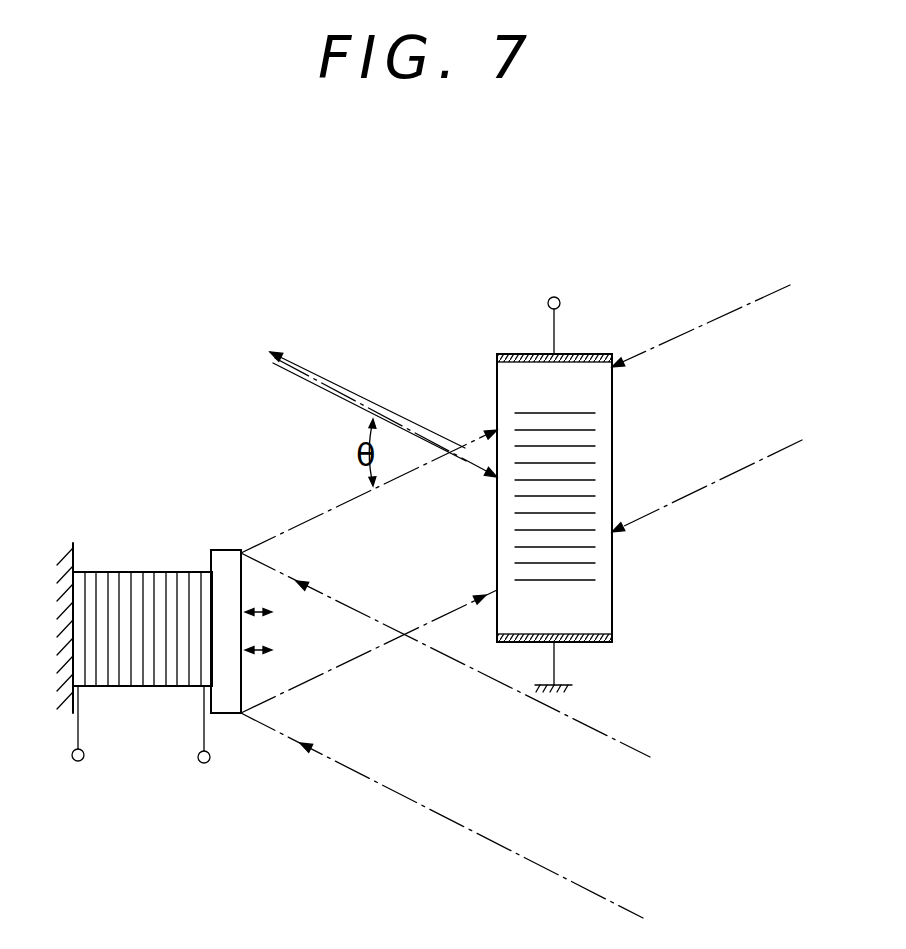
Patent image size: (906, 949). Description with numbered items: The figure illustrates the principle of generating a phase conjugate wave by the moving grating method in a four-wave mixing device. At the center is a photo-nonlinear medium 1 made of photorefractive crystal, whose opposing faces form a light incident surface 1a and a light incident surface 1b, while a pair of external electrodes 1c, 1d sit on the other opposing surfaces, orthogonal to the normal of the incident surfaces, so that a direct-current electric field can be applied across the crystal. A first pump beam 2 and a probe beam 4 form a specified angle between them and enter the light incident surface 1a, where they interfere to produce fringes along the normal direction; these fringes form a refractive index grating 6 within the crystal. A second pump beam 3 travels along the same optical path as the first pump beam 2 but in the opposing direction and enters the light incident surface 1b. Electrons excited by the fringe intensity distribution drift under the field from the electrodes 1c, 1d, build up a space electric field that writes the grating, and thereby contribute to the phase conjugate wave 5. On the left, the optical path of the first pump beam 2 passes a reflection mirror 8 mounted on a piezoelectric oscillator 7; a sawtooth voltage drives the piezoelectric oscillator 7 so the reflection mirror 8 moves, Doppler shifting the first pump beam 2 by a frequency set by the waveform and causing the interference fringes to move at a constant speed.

The photo-nonlinear medium 1 is at (571, 495).
The light incident surface 1a is at (497, 392).
The light incident surface 1b is at (612, 600).
The external electrode 1c is at (560, 303).
The external electrode 1d is at (555, 672).
The first pump beam 2 is at (310, 508).
The second pump beam 3 is at (735, 310).
The probe beam 4 is at (343, 403).
The phase conjugate wave 5 is at (378, 412).
The refractive index grating 6 is at (532, 580).
The piezoelectric oscillator 7 is at (137, 571).
The reflection mirror 8 is at (230, 560).